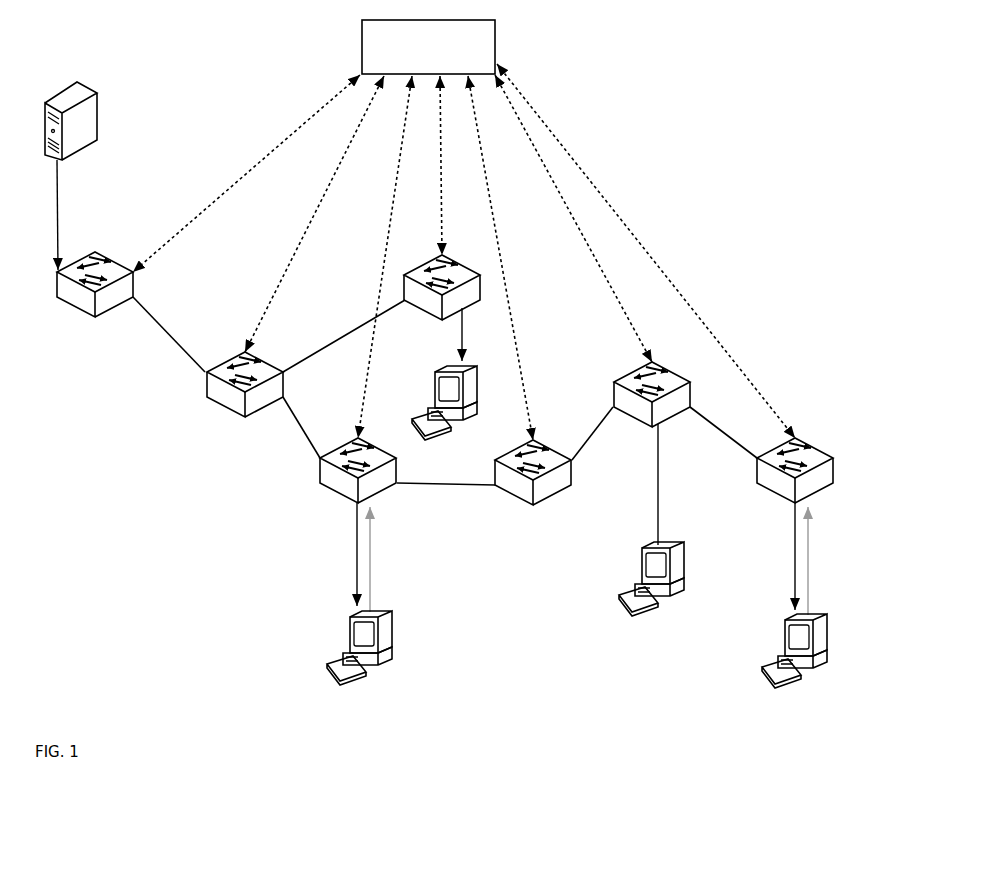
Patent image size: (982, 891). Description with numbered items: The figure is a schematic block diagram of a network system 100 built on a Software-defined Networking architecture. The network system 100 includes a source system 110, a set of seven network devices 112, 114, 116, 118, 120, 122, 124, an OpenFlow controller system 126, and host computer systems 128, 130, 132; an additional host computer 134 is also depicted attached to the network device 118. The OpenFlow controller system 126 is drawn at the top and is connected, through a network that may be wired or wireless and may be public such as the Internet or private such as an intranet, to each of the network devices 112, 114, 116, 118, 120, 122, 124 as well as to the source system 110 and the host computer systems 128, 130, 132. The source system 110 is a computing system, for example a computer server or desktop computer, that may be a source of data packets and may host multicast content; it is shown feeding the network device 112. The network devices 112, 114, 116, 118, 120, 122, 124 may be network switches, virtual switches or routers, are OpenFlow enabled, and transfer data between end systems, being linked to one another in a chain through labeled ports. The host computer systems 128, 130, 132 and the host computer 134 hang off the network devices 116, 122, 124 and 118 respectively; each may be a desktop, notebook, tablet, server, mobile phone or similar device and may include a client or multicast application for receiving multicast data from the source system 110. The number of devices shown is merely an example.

The network system 100 is at (124, 648).
The source system 110 is at (100, 176).
The network device 112 is at (131, 312).
The network device 114 is at (291, 379).
The network device 116 is at (377, 525).
The network device 118 is at (439, 308).
The network device 120 is at (551, 467).
The network device 122 is at (669, 446).
The network device 124 is at (778, 524).
The OpenFlow controller system 126 is at (464, 230).
The host computer system 128 is at (359, 659).
The host computer system 130 is at (651, 589).
The host computer system 132 is at (794, 662).
The host computer 134 is at (444, 409).